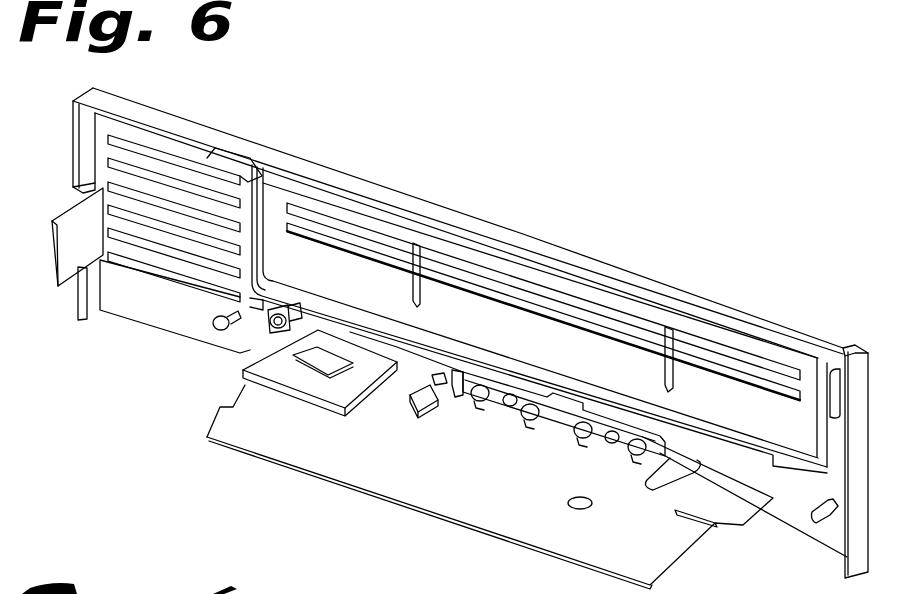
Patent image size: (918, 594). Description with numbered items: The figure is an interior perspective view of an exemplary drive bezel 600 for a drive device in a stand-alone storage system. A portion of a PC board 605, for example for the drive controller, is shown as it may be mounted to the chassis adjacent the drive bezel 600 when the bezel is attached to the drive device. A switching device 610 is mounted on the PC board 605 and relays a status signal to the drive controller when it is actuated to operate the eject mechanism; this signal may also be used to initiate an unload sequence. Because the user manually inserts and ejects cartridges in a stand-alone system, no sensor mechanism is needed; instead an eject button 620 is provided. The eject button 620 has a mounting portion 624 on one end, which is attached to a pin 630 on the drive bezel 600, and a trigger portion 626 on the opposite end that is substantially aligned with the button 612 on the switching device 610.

The drive bezel 600 is at (523, 233).
The PC board 605 is at (663, 573).
The switching device 610 is at (418, 409).
The button 612 is at (436, 386).
The eject button 620 is at (397, 350).
The mounting portion 624 is at (291, 312).
The trigger portion 626 is at (452, 380).
The pin 630 is at (273, 327).